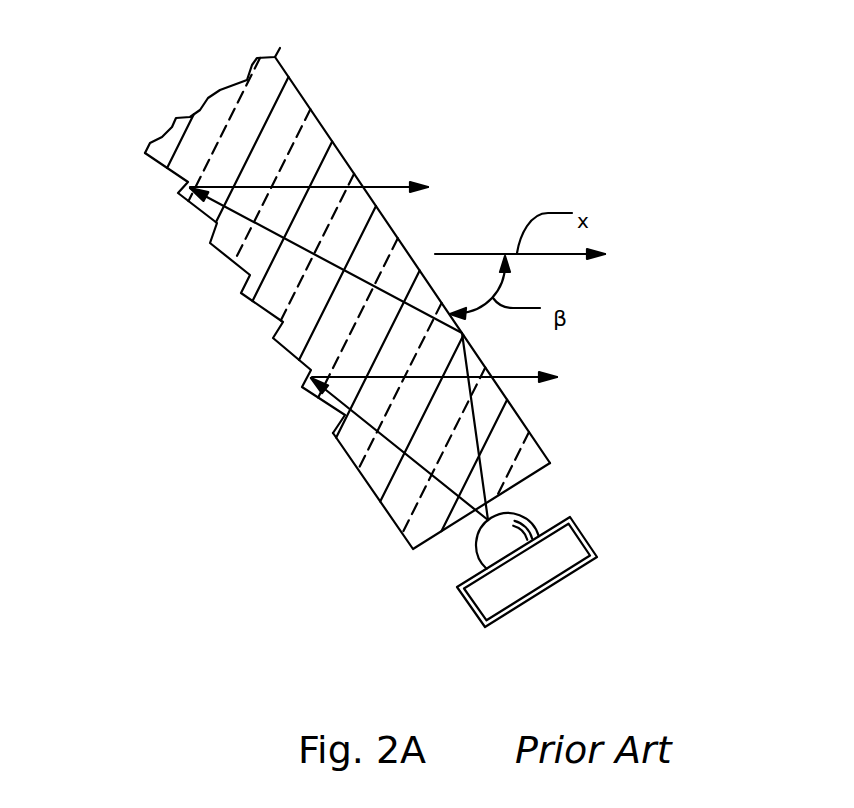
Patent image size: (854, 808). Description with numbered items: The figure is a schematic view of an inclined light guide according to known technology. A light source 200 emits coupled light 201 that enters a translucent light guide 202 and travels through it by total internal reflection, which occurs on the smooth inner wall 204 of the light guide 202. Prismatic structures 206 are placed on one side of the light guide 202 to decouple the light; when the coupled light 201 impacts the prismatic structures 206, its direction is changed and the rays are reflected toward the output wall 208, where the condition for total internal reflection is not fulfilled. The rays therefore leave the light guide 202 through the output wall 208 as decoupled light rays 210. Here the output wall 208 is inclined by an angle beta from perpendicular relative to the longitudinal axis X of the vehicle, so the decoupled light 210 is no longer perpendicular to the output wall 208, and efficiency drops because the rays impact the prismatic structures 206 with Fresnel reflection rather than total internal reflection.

The light source 200 is at (583, 533).
The coupled light 201 is at (483, 460).
The translucent light guide 202 is at (386, 511).
The smooth inner wall 204 is at (273, 105).
The prismatic structures 206 is at (207, 217).
The output wall 208 is at (322, 125).
The decoupled light rays 210 is at (523, 373).